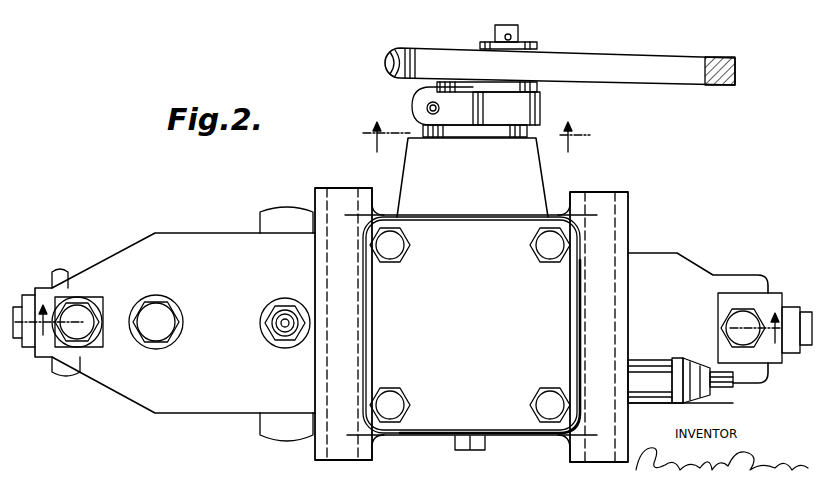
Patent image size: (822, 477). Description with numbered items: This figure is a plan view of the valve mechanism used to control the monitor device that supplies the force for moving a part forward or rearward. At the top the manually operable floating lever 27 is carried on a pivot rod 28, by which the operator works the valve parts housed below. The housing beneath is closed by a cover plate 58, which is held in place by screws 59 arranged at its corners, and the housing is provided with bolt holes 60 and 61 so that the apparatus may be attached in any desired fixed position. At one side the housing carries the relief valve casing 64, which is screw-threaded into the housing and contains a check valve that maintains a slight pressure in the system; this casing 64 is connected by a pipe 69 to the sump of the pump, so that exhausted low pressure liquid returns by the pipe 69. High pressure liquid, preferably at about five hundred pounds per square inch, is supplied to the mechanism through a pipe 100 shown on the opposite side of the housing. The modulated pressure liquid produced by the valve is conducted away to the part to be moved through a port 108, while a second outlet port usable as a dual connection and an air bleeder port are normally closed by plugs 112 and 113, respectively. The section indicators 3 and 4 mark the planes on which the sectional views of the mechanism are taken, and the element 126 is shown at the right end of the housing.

The floating lever 27 is at (645, 67).
The pivot rod 28 is at (520, 36).
The cover plate 58 is at (467, 238).
The screws 59 is at (395, 415).
The bolt hole 60 is at (600, 200).
The bolt hole 61 is at (337, 200).
The casing 64 is at (645, 370).
The pipe 69 is at (714, 386).
The pipe 100 is at (278, 333).
The port 108 is at (17, 305).
The plug 112 is at (82, 312).
The plug 113 is at (155, 312).
The housing 126 is at (807, 312).
The section line 3- 3 is at (410, 317).
The section line 4- 4 is at (475, 138).